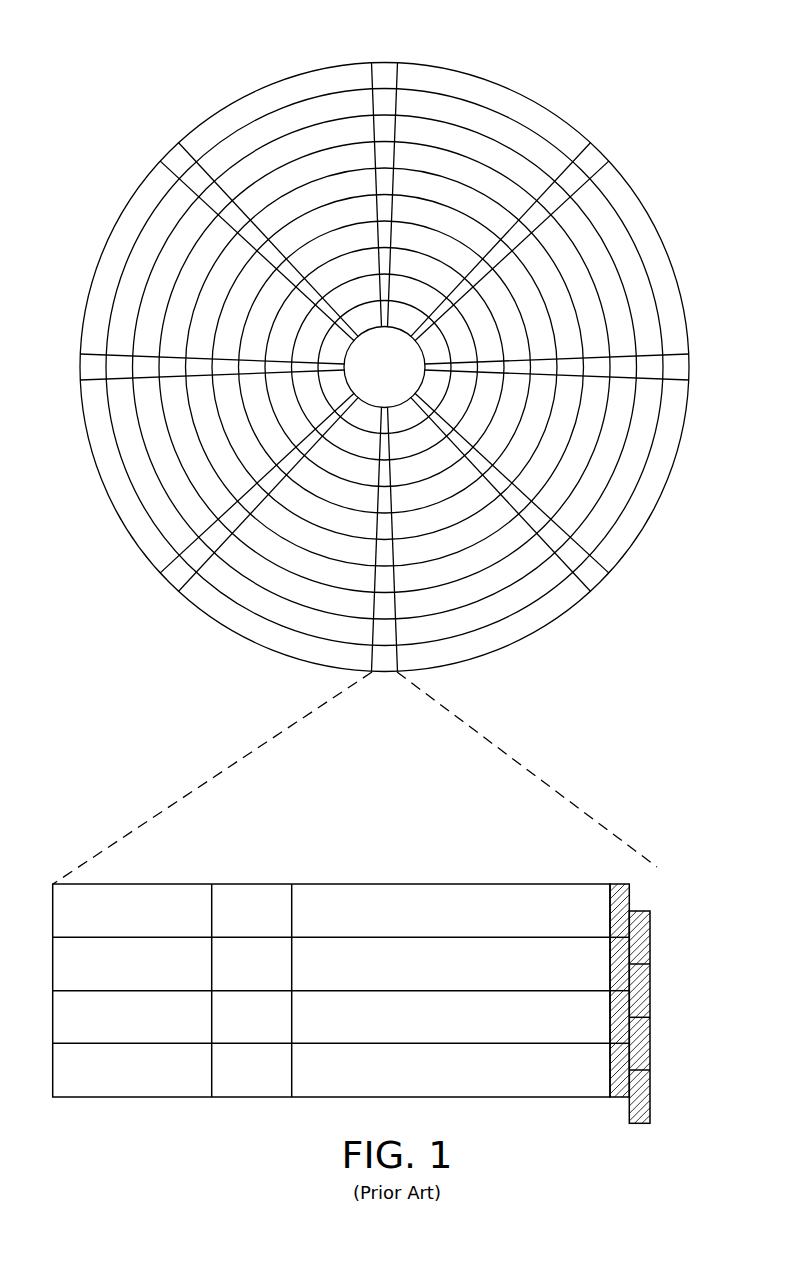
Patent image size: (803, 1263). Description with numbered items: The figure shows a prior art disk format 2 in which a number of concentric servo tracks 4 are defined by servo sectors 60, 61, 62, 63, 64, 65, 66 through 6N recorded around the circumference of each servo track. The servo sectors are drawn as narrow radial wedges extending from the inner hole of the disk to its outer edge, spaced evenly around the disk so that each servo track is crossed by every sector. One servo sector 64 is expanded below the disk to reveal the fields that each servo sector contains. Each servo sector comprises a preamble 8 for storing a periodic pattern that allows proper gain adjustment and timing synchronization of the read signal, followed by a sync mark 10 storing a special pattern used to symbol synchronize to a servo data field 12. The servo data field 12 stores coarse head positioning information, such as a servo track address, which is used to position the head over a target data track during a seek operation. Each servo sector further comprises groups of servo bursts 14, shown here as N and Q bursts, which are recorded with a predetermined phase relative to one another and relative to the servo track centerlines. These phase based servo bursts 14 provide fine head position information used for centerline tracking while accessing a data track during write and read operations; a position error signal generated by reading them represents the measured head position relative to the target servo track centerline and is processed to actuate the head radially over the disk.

The disk format 2 is at (154, 63).
The servo tracks 4 is at (508, 108).
The servo sector 60 is at (385, 72).
The servo sector 61 is at (592, 159).
The servo sector 62 is at (682, 368).
The servo sector 63 is at (592, 577).
The servo sector 64 is at (246, 738).
The servo sector 65 is at (173, 578).
The servo sector 66 is at (83, 367).
The servo sector 6N is at (177, 158).
The preamble 8 is at (139, 884).
The sync mark 10 is at (255, 884).
The servo data field 12 is at (440, 884).
The servo bursts 14 is at (651, 878).